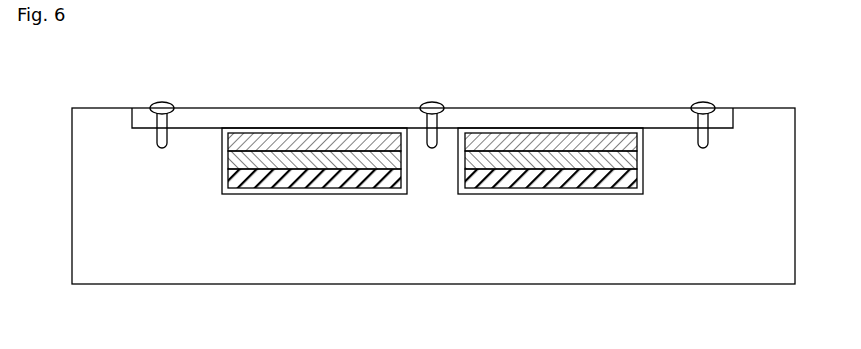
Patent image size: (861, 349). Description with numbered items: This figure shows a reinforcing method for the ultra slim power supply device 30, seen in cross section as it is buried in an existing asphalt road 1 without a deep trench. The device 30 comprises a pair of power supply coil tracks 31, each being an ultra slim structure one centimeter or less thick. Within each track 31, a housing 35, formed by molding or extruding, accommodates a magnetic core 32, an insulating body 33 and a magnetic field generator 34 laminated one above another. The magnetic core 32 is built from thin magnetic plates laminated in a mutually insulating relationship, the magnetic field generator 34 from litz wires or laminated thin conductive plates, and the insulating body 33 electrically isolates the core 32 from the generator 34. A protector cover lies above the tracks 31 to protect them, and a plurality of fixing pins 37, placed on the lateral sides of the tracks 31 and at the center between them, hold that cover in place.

The asphalt road 1 is at (757, 108).
The ultra slim power supply device 30 is at (238, 105).
The power supply track 31 is at (550, 203).
The magnetic core 32 is at (512, 175).
The insulating body 33 is at (557, 155).
The magnetic field generator 34 is at (600, 137).
The housing 35 is at (509, 195).
The fixing pin 37 is at (703, 103).